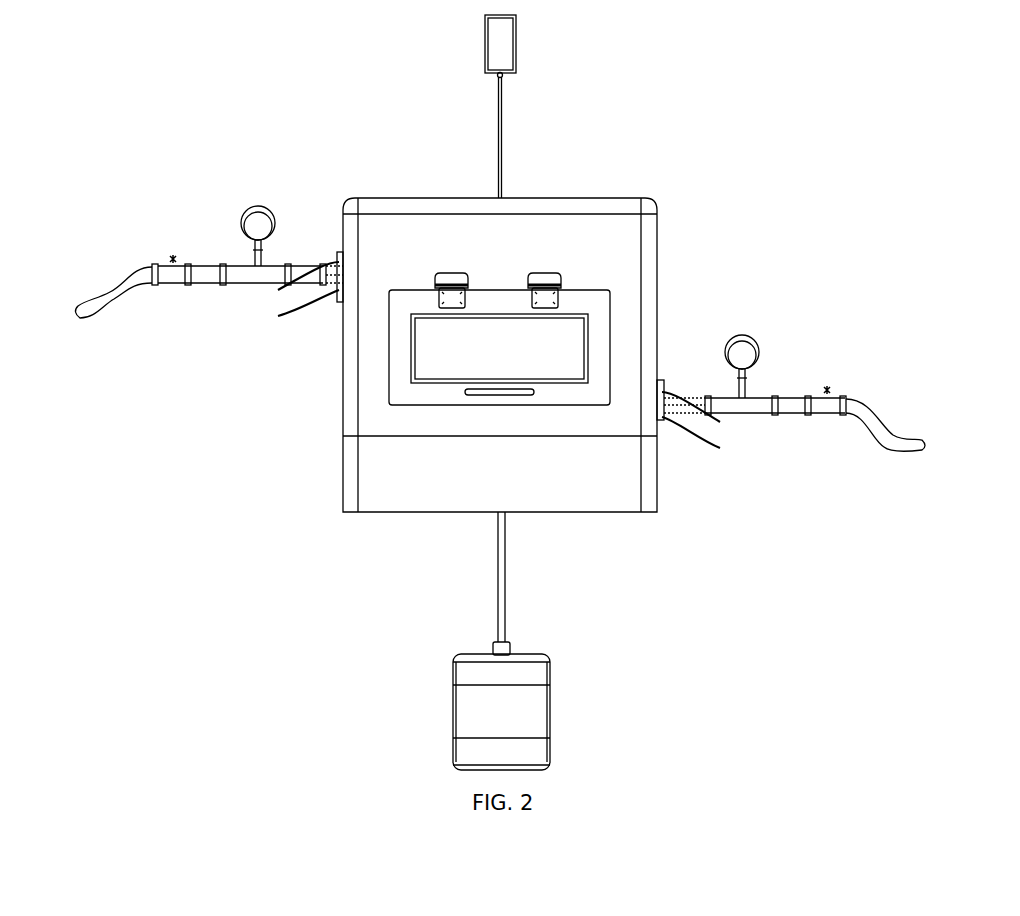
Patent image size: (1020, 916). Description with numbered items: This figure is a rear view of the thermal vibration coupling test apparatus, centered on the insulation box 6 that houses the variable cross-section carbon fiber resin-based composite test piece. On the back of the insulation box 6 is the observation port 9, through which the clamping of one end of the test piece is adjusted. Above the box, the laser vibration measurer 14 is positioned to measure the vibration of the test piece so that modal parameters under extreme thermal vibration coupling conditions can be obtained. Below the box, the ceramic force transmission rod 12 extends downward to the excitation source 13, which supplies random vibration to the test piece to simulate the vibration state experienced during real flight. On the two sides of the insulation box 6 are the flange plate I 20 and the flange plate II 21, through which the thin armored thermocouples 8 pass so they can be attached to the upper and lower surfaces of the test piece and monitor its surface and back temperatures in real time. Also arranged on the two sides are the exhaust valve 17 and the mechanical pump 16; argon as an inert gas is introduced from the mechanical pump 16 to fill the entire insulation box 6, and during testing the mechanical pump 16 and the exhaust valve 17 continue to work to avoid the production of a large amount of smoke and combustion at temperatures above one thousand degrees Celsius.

The insulation box 6 is at (655, 297).
The thin armored thermocouples 8 is at (293, 317).
The observation port 9 is at (418, 373).
The ceramic force transmission rod 12 is at (502, 610).
The excitation source 13 is at (548, 717).
The laser vibration measurer 14 is at (500, 62).
The mechanical pump 16 is at (760, 405).
The exhaust valve 17 is at (247, 270).
The flange plate I 20 is at (662, 387).
The flange plate II 21 is at (337, 250).